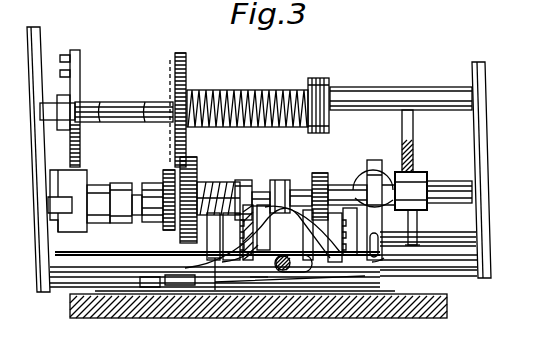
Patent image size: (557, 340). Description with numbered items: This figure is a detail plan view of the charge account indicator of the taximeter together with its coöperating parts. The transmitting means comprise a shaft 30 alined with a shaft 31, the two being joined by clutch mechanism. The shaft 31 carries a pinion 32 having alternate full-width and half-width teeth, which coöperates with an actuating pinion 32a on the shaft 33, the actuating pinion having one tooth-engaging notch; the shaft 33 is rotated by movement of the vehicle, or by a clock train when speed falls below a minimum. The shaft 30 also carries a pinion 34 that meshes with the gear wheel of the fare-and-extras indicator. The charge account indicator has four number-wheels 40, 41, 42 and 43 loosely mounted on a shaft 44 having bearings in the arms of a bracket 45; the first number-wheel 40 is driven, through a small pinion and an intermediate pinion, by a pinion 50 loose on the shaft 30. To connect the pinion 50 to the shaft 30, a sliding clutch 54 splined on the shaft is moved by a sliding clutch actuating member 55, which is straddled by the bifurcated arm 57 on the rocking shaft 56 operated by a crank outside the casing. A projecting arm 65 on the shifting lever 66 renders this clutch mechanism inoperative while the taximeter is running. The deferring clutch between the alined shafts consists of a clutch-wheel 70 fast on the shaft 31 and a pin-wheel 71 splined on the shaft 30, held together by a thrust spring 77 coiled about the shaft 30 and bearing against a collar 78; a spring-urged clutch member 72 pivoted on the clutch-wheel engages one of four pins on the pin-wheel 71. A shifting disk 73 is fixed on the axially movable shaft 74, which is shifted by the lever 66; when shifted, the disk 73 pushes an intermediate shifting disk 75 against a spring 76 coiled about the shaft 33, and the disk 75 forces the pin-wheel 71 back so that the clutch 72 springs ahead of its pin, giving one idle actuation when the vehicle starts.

The transmitting shaft 30 is at (442, 187).
The shaft 31 is at (48, 212).
The pinion 32 is at (78, 182).
The actuating pinion 32a is at (72, 52).
The shaft 33 is at (82, 104).
The pinion 34 is at (417, 222).
The number-wheel 40 is at (355, 250).
The number-wheel 41 is at (275, 248).
The number-wheel 42 is at (279, 265).
The number-wheel 43 is at (240, 262).
The shaft 44 is at (189, 254).
The bracket 45 is at (215, 260).
The pinion 50 is at (325, 157).
The sliding clutch 54 is at (280, 183).
The sliding clutch actuating member 55 is at (258, 277).
The rocking shaft 56 is at (393, 168).
The arm 57 is at (382, 243).
The projecting arm 65 is at (395, 238).
The shifting lever 66 is at (415, 148).
The clutch-wheel 70 is at (164, 176).
The pin-wheel 71 is at (194, 183).
The clutch member 72 is at (166, 189).
The shifting disk 73 is at (170, 71).
The axially movable shaft 74 is at (133, 103).
The intermediate shifting disk 75 is at (183, 74).
The spring 76 is at (258, 92).
The thrust spring 77 is at (228, 183).
The collar 78 is at (247, 181).